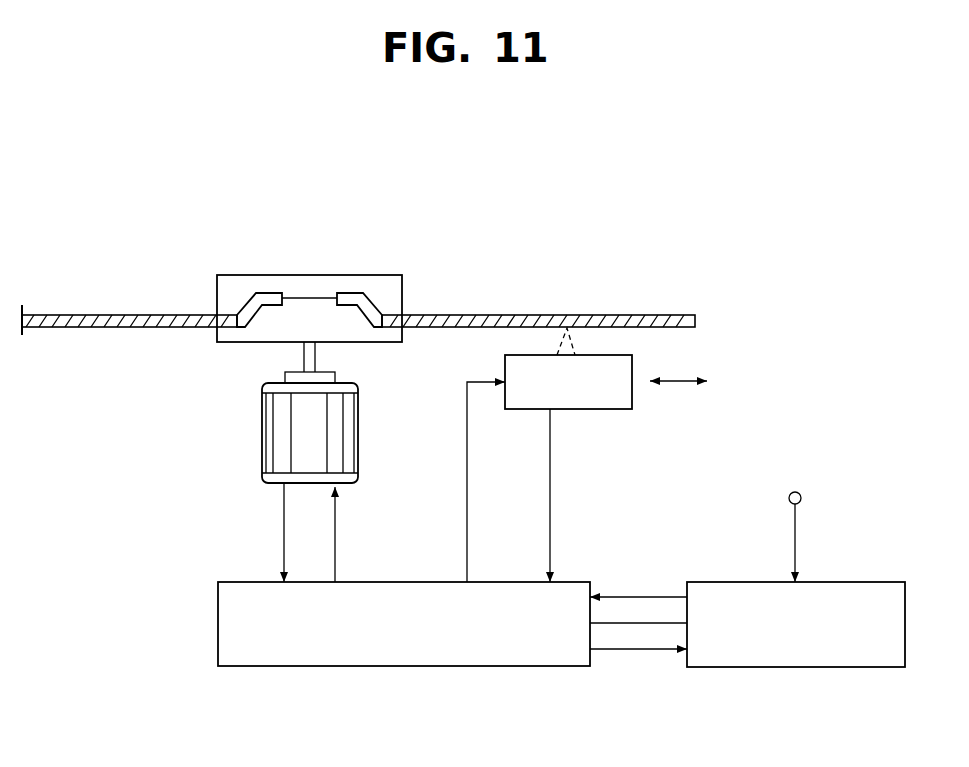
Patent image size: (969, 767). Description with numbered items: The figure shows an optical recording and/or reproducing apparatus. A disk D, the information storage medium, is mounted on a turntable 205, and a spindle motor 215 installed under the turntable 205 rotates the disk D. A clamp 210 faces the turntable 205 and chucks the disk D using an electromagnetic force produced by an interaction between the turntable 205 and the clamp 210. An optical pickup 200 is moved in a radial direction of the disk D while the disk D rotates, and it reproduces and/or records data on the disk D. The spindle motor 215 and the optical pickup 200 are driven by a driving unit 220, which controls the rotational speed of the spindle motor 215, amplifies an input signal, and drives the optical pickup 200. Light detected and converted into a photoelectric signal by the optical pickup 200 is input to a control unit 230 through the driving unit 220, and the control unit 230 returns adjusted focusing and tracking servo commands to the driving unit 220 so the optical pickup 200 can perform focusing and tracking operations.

The disk D is at (648, 312).
The optical pickup 200 is at (599, 400).
The turntable 205 is at (238, 333).
The clamp 210 is at (247, 284).
The spindle motor 215 is at (267, 433).
The driving unit 220 is at (402, 666).
The control unit 230 is at (807, 667).